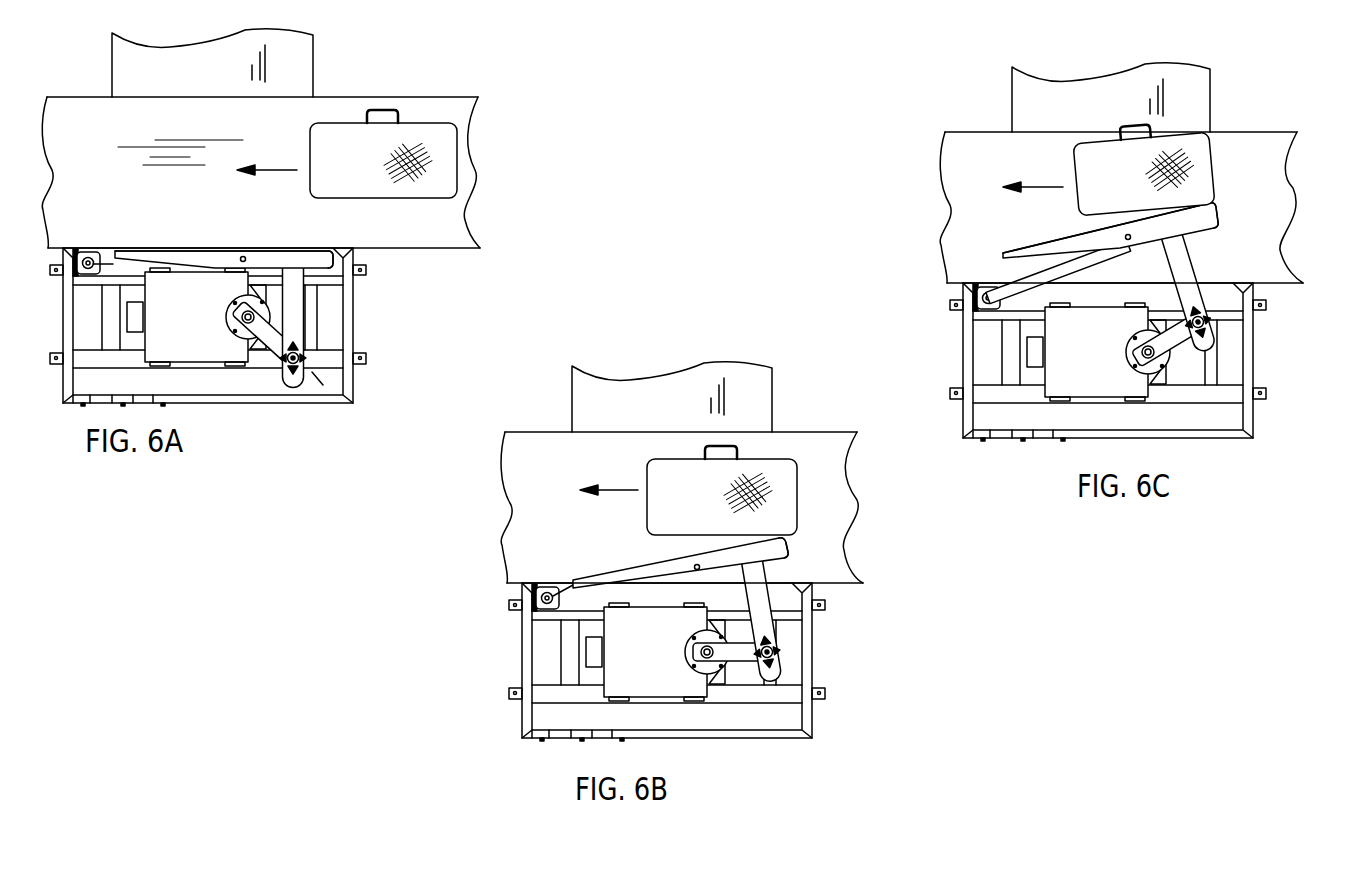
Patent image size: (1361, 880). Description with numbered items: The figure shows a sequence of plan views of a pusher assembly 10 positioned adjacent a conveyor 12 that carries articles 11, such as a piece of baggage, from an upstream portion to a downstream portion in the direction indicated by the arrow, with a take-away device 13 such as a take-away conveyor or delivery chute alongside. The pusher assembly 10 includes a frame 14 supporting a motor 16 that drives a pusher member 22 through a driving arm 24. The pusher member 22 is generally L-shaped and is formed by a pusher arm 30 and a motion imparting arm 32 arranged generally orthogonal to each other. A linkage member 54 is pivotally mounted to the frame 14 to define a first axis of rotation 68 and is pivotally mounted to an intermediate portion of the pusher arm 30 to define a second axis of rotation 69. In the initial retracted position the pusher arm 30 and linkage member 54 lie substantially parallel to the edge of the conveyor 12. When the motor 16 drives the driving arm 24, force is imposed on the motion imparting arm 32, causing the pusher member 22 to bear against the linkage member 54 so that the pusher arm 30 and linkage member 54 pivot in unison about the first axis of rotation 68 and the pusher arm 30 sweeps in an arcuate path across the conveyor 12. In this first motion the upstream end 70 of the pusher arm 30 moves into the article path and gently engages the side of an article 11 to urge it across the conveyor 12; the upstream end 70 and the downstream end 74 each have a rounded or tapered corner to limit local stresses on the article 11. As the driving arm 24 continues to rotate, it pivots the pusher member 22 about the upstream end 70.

In FIG. 6A, the pusher assembly 10 is at (375, 306).
In FIG. 6B, the pusher assembly 10 is at (741, 670).
In FIG. 6C, the pusher assembly 10 is at (1055, 364).
In FIG. 6A, the article 11 is at (320, 132).
In FIG. 6B, the article 11 is at (744, 490).
In FIG. 6C, the article 11 is at (1122, 174).
In FIG. 6A, the conveyor 12 is at (433, 243).
In FIG. 6B, the conveyor 12 is at (686, 523).
In FIG. 6C, the conveyor 12 is at (1099, 207).
In FIG. 6A, the take-away device 13 is at (313, 47).
In FIG. 6B, the take-away device 13 is at (696, 397).
In FIG. 6C, the take-away device 13 is at (1140, 97).
In FIG. 6A, the frame 14 is at (322, 408).
In FIG. 6B, the frame 14 is at (707, 660).
In FIG. 6C, the frame 14 is at (1108, 360).
In FIG. 6A, the motor 16 is at (135, 320).
In FIG. 6B, the motor 16 is at (567, 706).
In FIG. 6A, the pusher member 22 is at (183, 247).
In FIG. 6B, the pusher member 22 is at (680, 544).
In FIG. 6C, the pusher member 22 is at (1175, 230).
In FIG. 6A, the driving arm 24 is at (272, 335).
In FIG. 6B, the driving arm 24 is at (729, 704).
In FIG. 6A, the pusher arm 30 is at (305, 252).
In FIG. 6C, the pusher arm 30 is at (1093, 228).
In FIG. 6A, the motion imparting arm 32 is at (295, 340).
In FIG. 6B, the motion imparting arm 32 is at (794, 614).
In FIG. 6A, the linkage member 54 is at (153, 262).
In FIG. 6B, the linkage member 54 is at (661, 647).
In FIG. 6A, the first axis of rotation 68 is at (90, 250).
In FIG. 6A, the second axis of rotation 69 is at (244, 254).
In FIG. 6C, the second axis of rotation 69 is at (1124, 257).
In FIG. 6A, the upstream end 70 is at (353, 260).
In FIG. 6B, the upstream end 70 is at (809, 541).
In FIG. 6C, the upstream end 70 is at (1268, 193).
In FIG. 6A, the downstream end 74 is at (117, 250).
In FIG. 6B, the downstream end 74 is at (552, 572).
In FIG. 6C, the downstream end 74 is at (1018, 275).